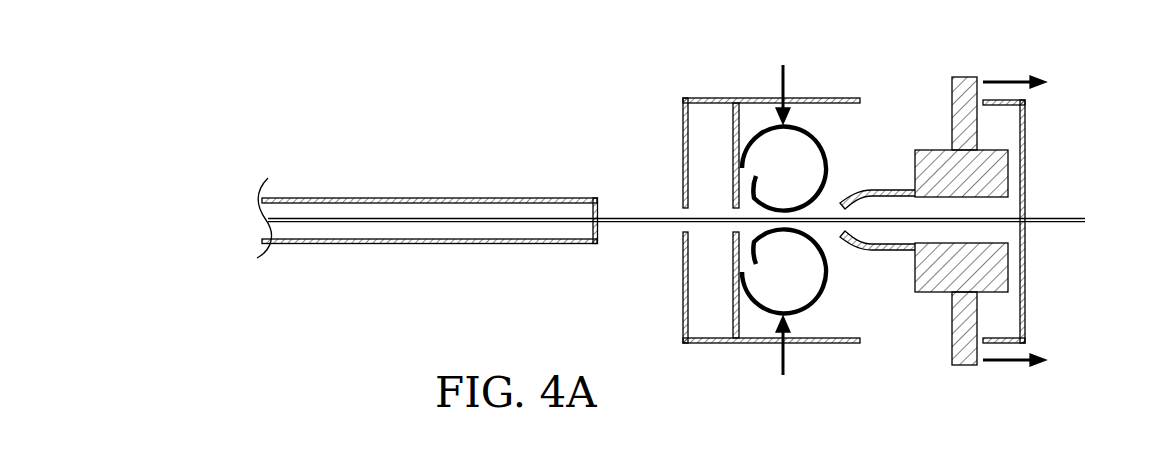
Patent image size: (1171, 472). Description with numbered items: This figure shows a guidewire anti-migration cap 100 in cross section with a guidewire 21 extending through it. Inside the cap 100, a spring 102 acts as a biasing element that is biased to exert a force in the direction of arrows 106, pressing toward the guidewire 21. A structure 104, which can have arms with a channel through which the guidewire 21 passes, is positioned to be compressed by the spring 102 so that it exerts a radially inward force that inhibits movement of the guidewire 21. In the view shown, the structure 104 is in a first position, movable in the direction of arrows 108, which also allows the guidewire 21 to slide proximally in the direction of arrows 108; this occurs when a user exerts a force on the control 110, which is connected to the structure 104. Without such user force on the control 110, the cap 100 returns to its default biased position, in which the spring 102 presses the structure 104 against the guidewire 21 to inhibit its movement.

The guidewire 21 is at (666, 216).
The guidewire anti-migration cap 100 is at (1067, 91).
The spring 102 is at (815, 136).
The structure 104 is at (858, 194).
The arrows 106 is at (781, 74).
The arrows 108 is at (1003, 80).
The control 110 is at (964, 367).